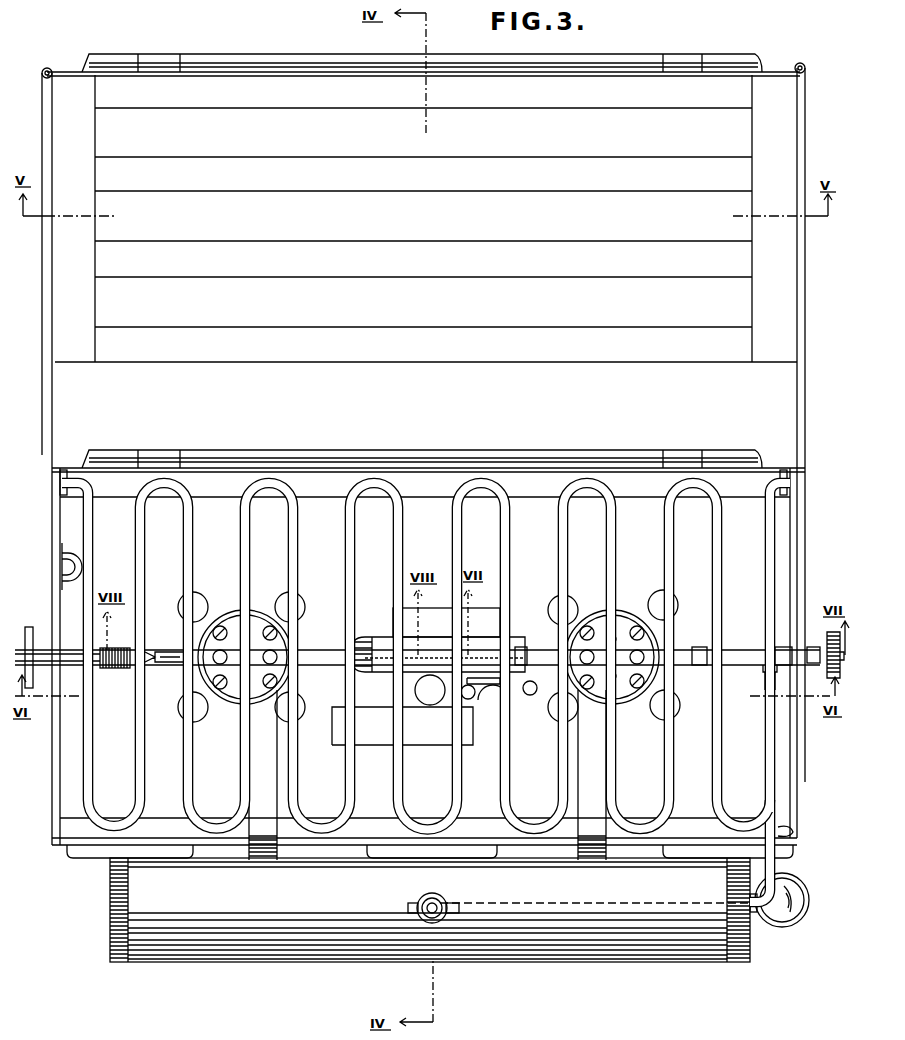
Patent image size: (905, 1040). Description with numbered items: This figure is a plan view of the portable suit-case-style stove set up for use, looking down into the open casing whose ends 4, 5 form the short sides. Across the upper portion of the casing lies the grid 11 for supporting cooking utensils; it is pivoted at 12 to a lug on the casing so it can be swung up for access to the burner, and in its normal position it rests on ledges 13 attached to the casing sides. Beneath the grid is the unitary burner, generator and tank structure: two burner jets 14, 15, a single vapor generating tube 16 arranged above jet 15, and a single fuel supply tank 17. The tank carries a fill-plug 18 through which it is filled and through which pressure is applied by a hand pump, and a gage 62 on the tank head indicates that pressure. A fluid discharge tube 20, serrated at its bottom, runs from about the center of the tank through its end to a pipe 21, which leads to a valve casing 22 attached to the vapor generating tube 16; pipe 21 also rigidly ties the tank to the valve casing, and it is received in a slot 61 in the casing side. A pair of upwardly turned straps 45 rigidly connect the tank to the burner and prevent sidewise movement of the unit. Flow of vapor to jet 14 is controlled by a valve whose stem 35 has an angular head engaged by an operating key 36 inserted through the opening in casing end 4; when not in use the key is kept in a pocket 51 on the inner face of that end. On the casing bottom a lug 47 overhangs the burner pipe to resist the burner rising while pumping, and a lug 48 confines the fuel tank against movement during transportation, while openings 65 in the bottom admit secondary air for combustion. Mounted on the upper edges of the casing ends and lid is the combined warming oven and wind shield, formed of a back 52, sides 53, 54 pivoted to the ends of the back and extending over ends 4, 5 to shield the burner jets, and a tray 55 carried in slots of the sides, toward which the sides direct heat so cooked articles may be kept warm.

The casing end 4 is at (58, 817).
The casing end 5 is at (803, 798).
The grid 11 is at (80, 523).
The grid pivot 12 is at (60, 483).
The ledges 13 is at (737, 497).
The burner jet 14 is at (218, 614).
The burner jet 15 is at (625, 611).
The vapor generating tube 16 is at (684, 648).
The fuel supply tank 17 is at (500, 955).
The fill-plug 18 is at (425, 920).
The fluid discharge tube 20 is at (620, 920).
The pipe 21 is at (776, 865).
The valve casing 22 is at (778, 649).
The valve stem 35 is at (160, 664).
The operating key 36 is at (101, 668).
The straps 45 is at (257, 753).
The lug 47 is at (485, 627).
The lug 48 is at (473, 747).
The pocket 51 is at (79, 572).
The back 52 is at (777, 67).
The side 53 is at (805, 121).
The side 54 is at (42, 300).
The tray 55 is at (652, 355).
The slot 61 is at (793, 832).
The gage 62 is at (783, 927).
The openings 65 is at (300, 602).